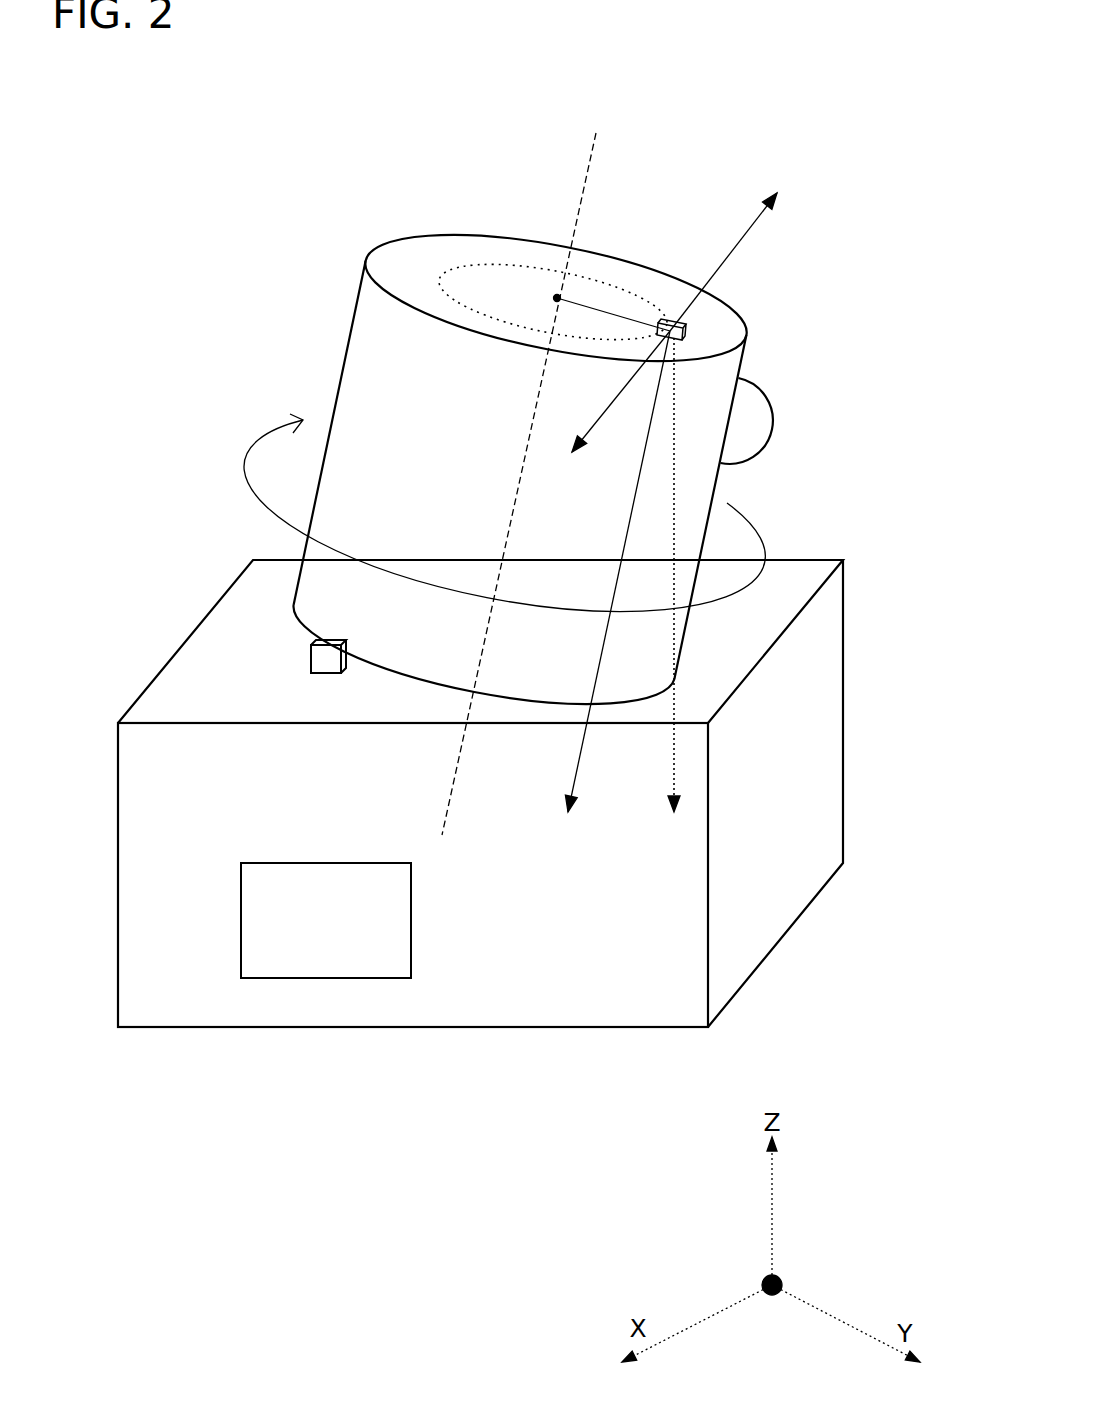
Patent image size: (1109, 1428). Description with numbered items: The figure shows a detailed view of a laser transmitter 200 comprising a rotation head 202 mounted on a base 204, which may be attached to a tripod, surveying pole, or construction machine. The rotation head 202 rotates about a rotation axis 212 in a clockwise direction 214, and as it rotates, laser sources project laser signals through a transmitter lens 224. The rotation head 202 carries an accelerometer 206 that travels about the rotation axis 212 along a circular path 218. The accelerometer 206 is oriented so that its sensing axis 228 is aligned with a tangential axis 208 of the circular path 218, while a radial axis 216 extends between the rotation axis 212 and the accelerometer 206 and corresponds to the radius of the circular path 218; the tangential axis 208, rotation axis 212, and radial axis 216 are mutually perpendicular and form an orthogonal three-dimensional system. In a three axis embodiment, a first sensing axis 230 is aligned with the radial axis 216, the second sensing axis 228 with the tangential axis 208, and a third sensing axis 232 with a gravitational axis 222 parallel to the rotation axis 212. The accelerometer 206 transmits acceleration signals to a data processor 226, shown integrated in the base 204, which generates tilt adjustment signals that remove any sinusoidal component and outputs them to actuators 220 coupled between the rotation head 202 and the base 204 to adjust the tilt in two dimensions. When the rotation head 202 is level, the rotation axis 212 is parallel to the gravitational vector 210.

The laser transmitter 200 is at (457, 79).
The rotation head 202 is at (346, 310).
The base 204 is at (118, 698).
The accelerometer 206 is at (704, 319).
The tangential axis 208 is at (723, 235).
The gravitational vector 210 is at (688, 500).
The rotation axis 212 is at (566, 192).
The clockwise direction 214 is at (242, 438).
The radial axis 216 is at (629, 334).
The circular path 218 is at (445, 256).
The actuators 220 is at (320, 686).
The gravitational axis 222 is at (600, 571).
The transmitter lens 224 is at (785, 400).
The data processor 226 is at (234, 900).
The sensing axis 228 is at (738, 218).
The first sensing axis 230 is at (591, 294).
The third sensing axis 232 is at (604, 573).